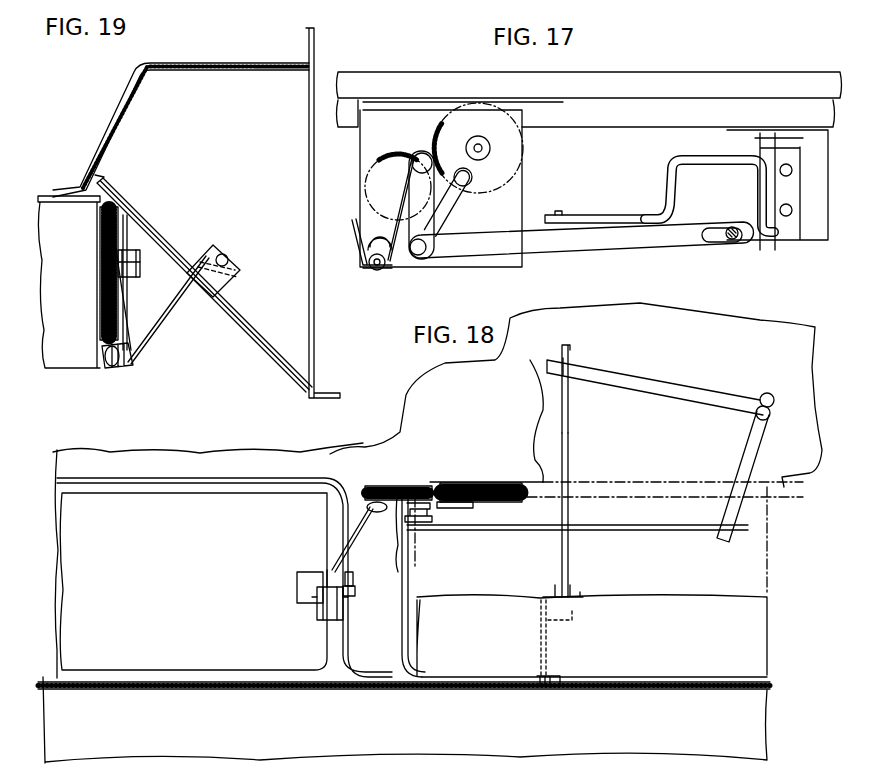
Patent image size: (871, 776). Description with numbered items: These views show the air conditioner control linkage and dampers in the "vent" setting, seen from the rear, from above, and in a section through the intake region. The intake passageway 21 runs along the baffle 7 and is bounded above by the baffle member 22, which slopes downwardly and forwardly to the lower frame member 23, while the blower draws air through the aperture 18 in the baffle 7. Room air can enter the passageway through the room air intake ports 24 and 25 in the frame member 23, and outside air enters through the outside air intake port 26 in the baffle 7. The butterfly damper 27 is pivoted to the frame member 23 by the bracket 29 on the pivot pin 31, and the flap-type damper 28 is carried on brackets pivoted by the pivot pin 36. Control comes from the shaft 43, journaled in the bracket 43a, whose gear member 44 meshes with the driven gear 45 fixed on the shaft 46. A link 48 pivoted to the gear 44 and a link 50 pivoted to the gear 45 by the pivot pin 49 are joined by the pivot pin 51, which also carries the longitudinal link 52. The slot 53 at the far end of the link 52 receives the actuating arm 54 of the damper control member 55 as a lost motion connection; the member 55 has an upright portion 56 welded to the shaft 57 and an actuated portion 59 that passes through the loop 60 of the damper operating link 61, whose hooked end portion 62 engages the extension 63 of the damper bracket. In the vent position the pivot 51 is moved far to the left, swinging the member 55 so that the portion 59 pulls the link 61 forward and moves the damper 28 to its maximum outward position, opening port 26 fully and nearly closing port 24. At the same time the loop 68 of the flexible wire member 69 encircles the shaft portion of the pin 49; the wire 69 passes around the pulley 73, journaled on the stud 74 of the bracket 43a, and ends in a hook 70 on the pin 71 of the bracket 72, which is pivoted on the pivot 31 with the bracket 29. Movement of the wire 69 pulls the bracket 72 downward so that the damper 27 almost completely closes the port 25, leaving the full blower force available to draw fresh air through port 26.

In FIG. 18, the baffle 7 is at (428, 690).
In FIG. 19, the aperture or passageway 18 is at (304, 218).
In FIG. 19, the intake passageway 21 is at (254, 86).
In FIG. 19, the baffle member 22 is at (203, 64).
In FIG. 19, the lower frame member 23 is at (55, 194).
In FIG. 17, the lower frame member 23 is at (685, 82).
In FIG. 18, the room air intake port 24 is at (426, 587).
In FIG. 19, the room air intake port 25 is at (243, 322).
In FIG. 18, the room air intake port 25 is at (264, 680).
In FIG. 18, the outside air intake port 26 is at (684, 691).
In FIG. 19, the damper 27 is at (240, 333).
In FIG. 18, the damper 27 is at (154, 587).
In FIG. 18, the damper 28 is at (709, 632).
In FIG. 18, the bracket 29 is at (305, 580).
In FIG. 19, the pivot pin 31 is at (223, 247).
In FIG. 18, the pivot pin 31 is at (331, 611).
In FIG. 18, the pivot pin 36 is at (552, 684).
In FIG. 17, the shaft 43 is at (492, 147).
In FIG. 17, the bracket 43a is at (510, 193).
In FIG. 17, the gear member 44 is at (480, 123).
In FIG. 18, the gear member 44 is at (482, 487).
In FIG. 17, the gear 45 is at (400, 153).
In FIG. 18, the gear 45 is at (397, 481).
In FIG. 17, the shaft 46 is at (412, 183).
In FIG. 17, the link 48 is at (450, 206).
In FIG. 18, the link 48 is at (490, 508).
In FIG. 19, the pivot pin 49 is at (140, 244).
In FIG. 17, the pivot pin 49 is at (427, 153).
In FIG. 19, the link 50 is at (140, 276).
In FIG. 17, the link 50 is at (422, 215).
In FIG. 17, the pivot pin 51 is at (425, 251).
In FIG. 17, the link 52 is at (600, 247).
In FIG. 18, the link 52 is at (517, 528).
In FIG. 17, the slot 53 is at (705, 247).
In FIG. 17, the actuating arm 54 is at (733, 243).
In FIG. 18, the actuating arm 54 is at (735, 512).
In FIG. 18, the damper control member 55 is at (749, 425).
In FIG. 17, the upright portion 56 is at (770, 200).
In FIG. 18, the upright portion 56 is at (767, 393).
In FIG. 17, the shaft 57 is at (800, 146).
In FIG. 18, the shaft 57 is at (771, 397).
In FIG. 17, the actuated portion 59 is at (662, 178).
In FIG. 18, the actuated portion 59 is at (677, 393).
In FIG. 17, the loop 60 is at (560, 213).
In FIG. 18, the loop 60 is at (570, 413).
In FIG. 18, the damper operating link 61 is at (569, 556).
In FIG. 18, the hooked end portion 62 is at (583, 593).
In FIG. 18, the extension 63 is at (575, 620).
In FIG. 19, the loop 68 is at (120, 210).
In FIG. 18, the loop 68 is at (430, 487).
In FIG. 19, the flexible wire member 69 is at (122, 326).
In FIG. 18, the flexible wire member 69 is at (350, 548).
In FIG. 19, the hook or tab 70 is at (238, 271).
In FIG. 18, the hook or tab 70 is at (327, 570).
In FIG. 19, the pin 71 is at (240, 259).
In FIG. 18, the pin 71 is at (349, 580).
In FIG. 18, the bracket 72 is at (349, 591).
In FIG. 19, the pulley 73 is at (137, 359).
In FIG. 17, the pulley 73 is at (390, 269).
In FIG. 18, the pulley 73 is at (398, 498).
In FIG. 19, the stud 74 is at (108, 368).
In FIG. 17, the stud 74 is at (378, 272).